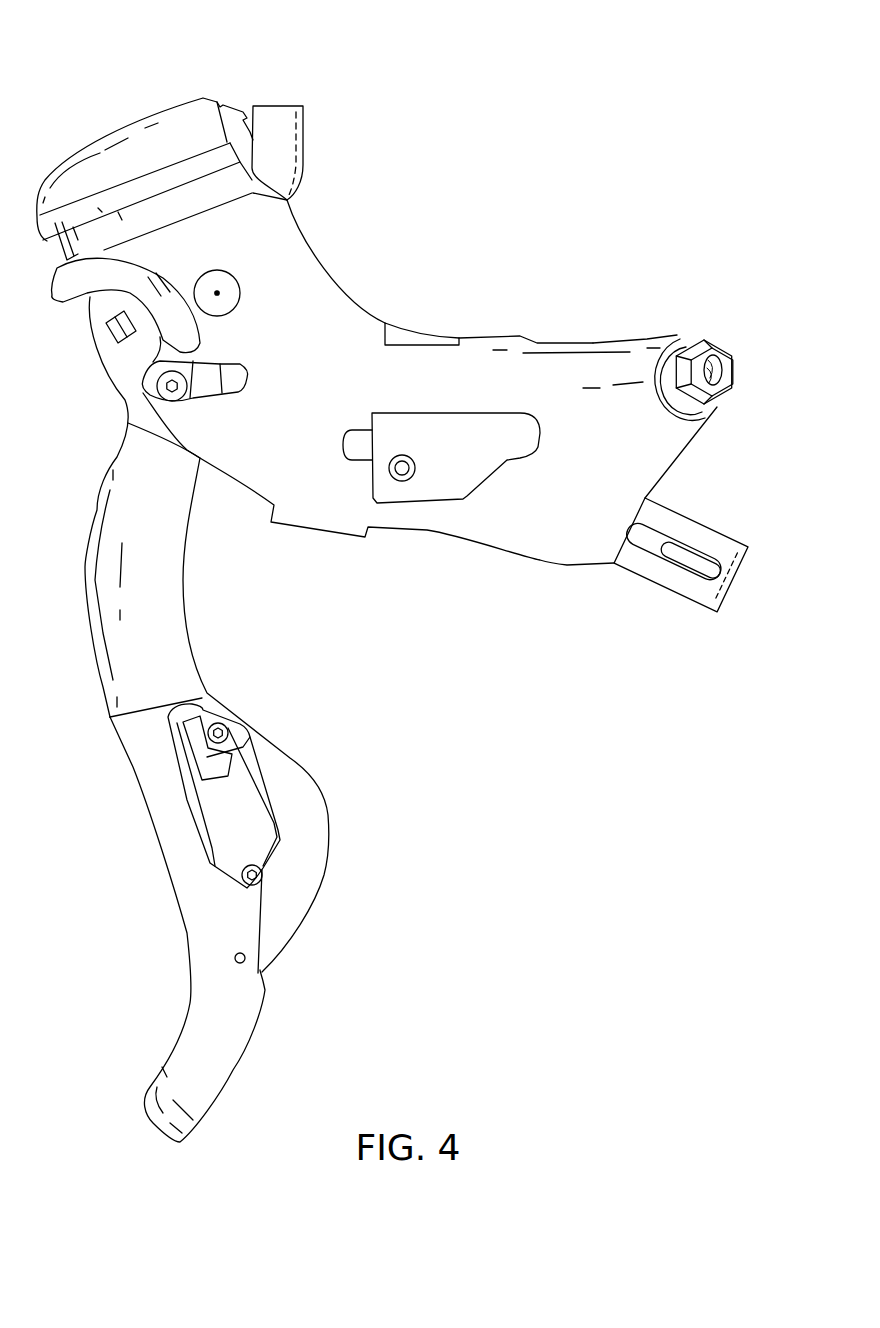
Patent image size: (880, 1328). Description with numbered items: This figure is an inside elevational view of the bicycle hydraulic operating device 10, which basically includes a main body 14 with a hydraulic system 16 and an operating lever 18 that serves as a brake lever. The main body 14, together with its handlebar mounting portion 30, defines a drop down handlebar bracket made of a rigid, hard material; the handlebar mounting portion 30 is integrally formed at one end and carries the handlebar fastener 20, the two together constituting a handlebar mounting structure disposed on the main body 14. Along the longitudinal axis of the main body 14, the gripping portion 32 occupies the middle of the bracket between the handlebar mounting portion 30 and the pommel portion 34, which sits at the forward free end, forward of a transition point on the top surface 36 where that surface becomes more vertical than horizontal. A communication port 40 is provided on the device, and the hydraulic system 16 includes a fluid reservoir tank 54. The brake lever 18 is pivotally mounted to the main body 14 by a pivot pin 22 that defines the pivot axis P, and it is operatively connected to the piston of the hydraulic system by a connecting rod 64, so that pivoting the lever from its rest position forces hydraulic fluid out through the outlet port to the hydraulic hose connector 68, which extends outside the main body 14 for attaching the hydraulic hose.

The bicycle hydraulic operating device 10 is at (452, 198).
The main body 14 is at (449, 398).
The hydraulic system 16 is at (478, 316).
The operating lever 18 is at (100, 691).
The handlebar fastener 20 is at (701, 579).
The pivot pin 22 is at (223, 282).
The pivot axis P is at (221, 296).
The handlebar mounting portion 30 is at (690, 453).
The gripping portion 32 is at (583, 333).
The pommel portion 34 is at (310, 207).
The top surface 36 is at (361, 302).
The communication port 40 is at (312, 132).
The fluid reservoir tank 54 is at (105, 113).
The connecting rod 64 is at (233, 394).
The hydraulic hose connector 68 is at (718, 346).